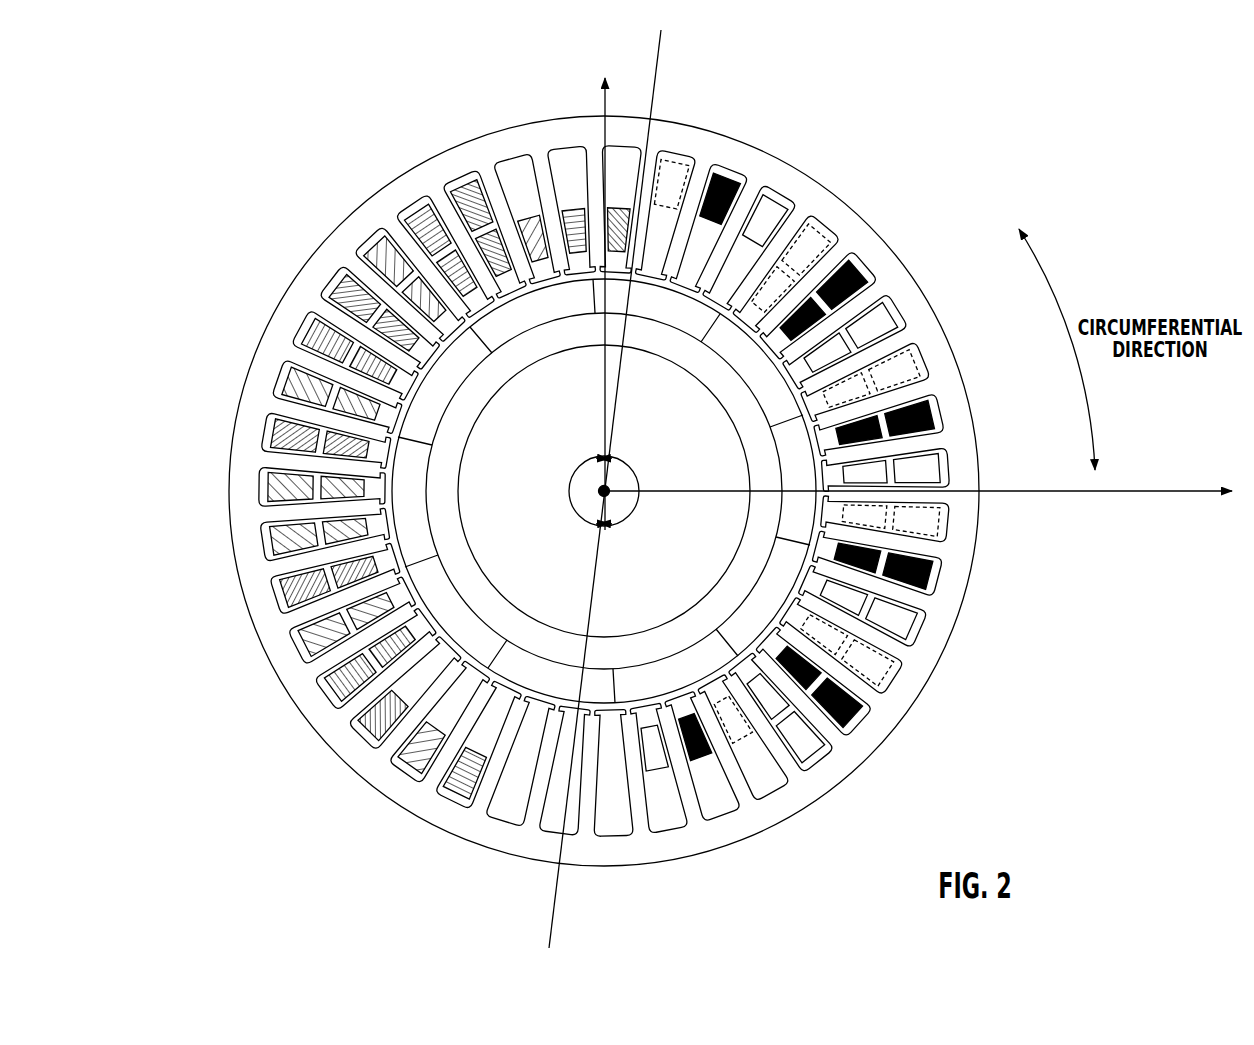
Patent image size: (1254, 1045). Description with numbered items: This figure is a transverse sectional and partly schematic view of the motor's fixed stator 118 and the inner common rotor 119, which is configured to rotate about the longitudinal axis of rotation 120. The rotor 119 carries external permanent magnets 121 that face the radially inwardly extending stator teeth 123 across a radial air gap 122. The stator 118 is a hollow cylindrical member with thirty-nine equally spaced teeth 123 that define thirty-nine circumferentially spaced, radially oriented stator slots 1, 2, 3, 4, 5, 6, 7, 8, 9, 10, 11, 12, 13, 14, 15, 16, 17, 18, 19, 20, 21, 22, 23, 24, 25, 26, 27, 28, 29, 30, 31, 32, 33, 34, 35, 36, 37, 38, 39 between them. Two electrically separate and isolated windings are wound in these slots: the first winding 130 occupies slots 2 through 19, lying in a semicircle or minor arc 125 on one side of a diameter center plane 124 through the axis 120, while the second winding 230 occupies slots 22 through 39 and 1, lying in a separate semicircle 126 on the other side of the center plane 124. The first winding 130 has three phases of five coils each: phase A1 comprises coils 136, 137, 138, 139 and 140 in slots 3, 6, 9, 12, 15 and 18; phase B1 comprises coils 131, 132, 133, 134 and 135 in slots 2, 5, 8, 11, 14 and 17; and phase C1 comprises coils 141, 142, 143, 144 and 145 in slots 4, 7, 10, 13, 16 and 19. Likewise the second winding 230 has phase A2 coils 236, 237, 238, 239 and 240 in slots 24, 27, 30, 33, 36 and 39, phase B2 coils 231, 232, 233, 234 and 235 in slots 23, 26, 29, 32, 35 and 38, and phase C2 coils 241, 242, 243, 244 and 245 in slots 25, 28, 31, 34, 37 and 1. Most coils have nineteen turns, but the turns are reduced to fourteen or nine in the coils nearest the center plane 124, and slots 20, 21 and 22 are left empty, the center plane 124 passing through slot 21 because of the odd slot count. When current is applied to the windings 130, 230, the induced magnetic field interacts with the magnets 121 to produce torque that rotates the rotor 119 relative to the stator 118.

The stator 118 is at (371, 197).
The rotor 119 is at (474, 440).
The axis of rotation 120 is at (595, 497).
The permanent magnets 121 is at (659, 666).
The radial air gap 122 is at (779, 611).
The stator teeth 123 is at (300, 518).
The diameter center plane 124 is at (670, 66).
The semicircle or minor arc 125 is at (640, 483).
The semicircle or minor arc 126 is at (572, 483).
The first winding 130 is at (824, 851).
The coil 131 is at (672, 156).
The coil 132 is at (913, 347).
The coil 133 is at (949, 500).
The coil 134 is at (896, 641).
The coil 135 is at (766, 741).
The coil 136 is at (722, 164).
The coil 137 is at (931, 399).
The coil 138 is at (946, 548).
The coil 139 is at (871, 705).
The coil 140 is at (703, 766).
The coil 141 is at (770, 184).
The coil 142 is at (947, 461).
The coil 143 is at (936, 600).
The coil 144 is at (831, 750).
The coil 145 is at (660, 781).
The second winding 230 is at (211, 819).
The coil 231 is at (454, 794).
The coil 232 is at (269, 569).
The coil 233 is at (280, 386).
The coil 234 is at (362, 260).
The coil 235 is at (525, 214).
The coil 236 is at (402, 764).
The coil 237 is at (312, 667).
The coil 238 is at (299, 343).
The coil 239 is at (431, 204).
The coil 240 is at (573, 199).
The coil 241 is at (377, 744).
The coil 242 is at (267, 436).
The coil 243 is at (321, 300).
The coil 244 is at (463, 187).
The coil 245 is at (620, 204).
The stator slot 1 is at (618, 193).
The stator slot 2 is at (664, 202).
The stator slot 3 is at (707, 216).
The stator slot 4 is at (747, 238).
The stator slot 5 is at (785, 266).
The stator slot 6 is at (817, 299).
The stator slot 7 is at (845, 338).
The stator slot 8 is at (868, 380).
The stator slot 9 is at (884, 426).
The stator slot 10 is at (896, 471).
The stator slot 11 is at (895, 517).
The stator slot 12 is at (886, 561).
The stator slot 13 is at (871, 605).
The stator slot 14 is at (848, 645).
The stator slot 15 is at (819, 683).
The stator slot 16 is at (784, 716).
The stator slot 17 is at (744, 746).
The stator slot 18 is at (703, 766).
The stator slot 19 is at (657, 781).
The stator slot 20 is at (612, 788).
The stator slot 21 is at (566, 787).
The stator slot 22 is at (522, 774).
The stator slot 23 is at (480, 757).
The stator slot 24 is at (441, 733).
The stator slot 25 is at (404, 700).
The stator slot 26 is at (372, 665).
The stator slot 27 is at (347, 625).
The stator slot 28 is at (328, 583).
The stator slot 29 is at (314, 535).
The stator slot 30 is at (309, 488).
The stator slot 31 is at (314, 443).
The stator slot 32 is at (327, 399).
The stator slot 33 is at (348, 355).
The stator slot 34 is at (374, 315).
The stator slot 35 is at (406, 281).
The stator slot 36 is at (443, 250).
The stator slot 37 is at (484, 226).
The stator slot 38 is at (527, 208).
The stator slot 39 is at (573, 197).